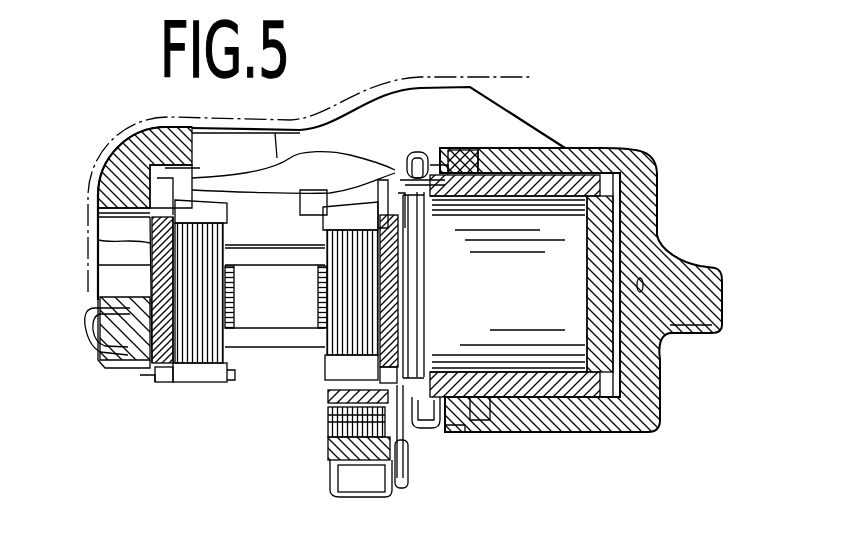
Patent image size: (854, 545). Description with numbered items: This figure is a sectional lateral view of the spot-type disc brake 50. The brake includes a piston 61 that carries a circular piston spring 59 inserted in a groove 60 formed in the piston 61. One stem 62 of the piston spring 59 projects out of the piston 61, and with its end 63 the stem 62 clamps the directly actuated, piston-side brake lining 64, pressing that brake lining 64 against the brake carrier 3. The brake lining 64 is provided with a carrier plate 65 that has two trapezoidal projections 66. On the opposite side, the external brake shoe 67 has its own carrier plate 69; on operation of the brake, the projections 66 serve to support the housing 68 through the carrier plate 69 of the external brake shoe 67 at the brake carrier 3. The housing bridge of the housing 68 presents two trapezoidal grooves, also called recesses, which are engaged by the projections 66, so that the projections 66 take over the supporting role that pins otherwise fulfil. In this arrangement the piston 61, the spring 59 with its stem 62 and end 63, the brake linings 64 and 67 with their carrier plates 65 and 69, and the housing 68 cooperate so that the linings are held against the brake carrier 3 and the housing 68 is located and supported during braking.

The brake carrier 3 is at (318, 481).
The spot-type disc brake 50 is at (680, 195).
The piston spring 59 is at (422, 316).
The groove 60 is at (470, 385).
The piston 61 is at (605, 424).
The stem 62 is at (452, 197).
The end 63 is at (392, 180).
The brake lining 64 is at (320, 356).
The carrier plate 65 is at (374, 226).
The trapezoidal projections 66 is at (394, 222).
The external brake shoe 67 is at (163, 383).
The housing 68 is at (103, 140).
The carrier plate 69 is at (98, 242).